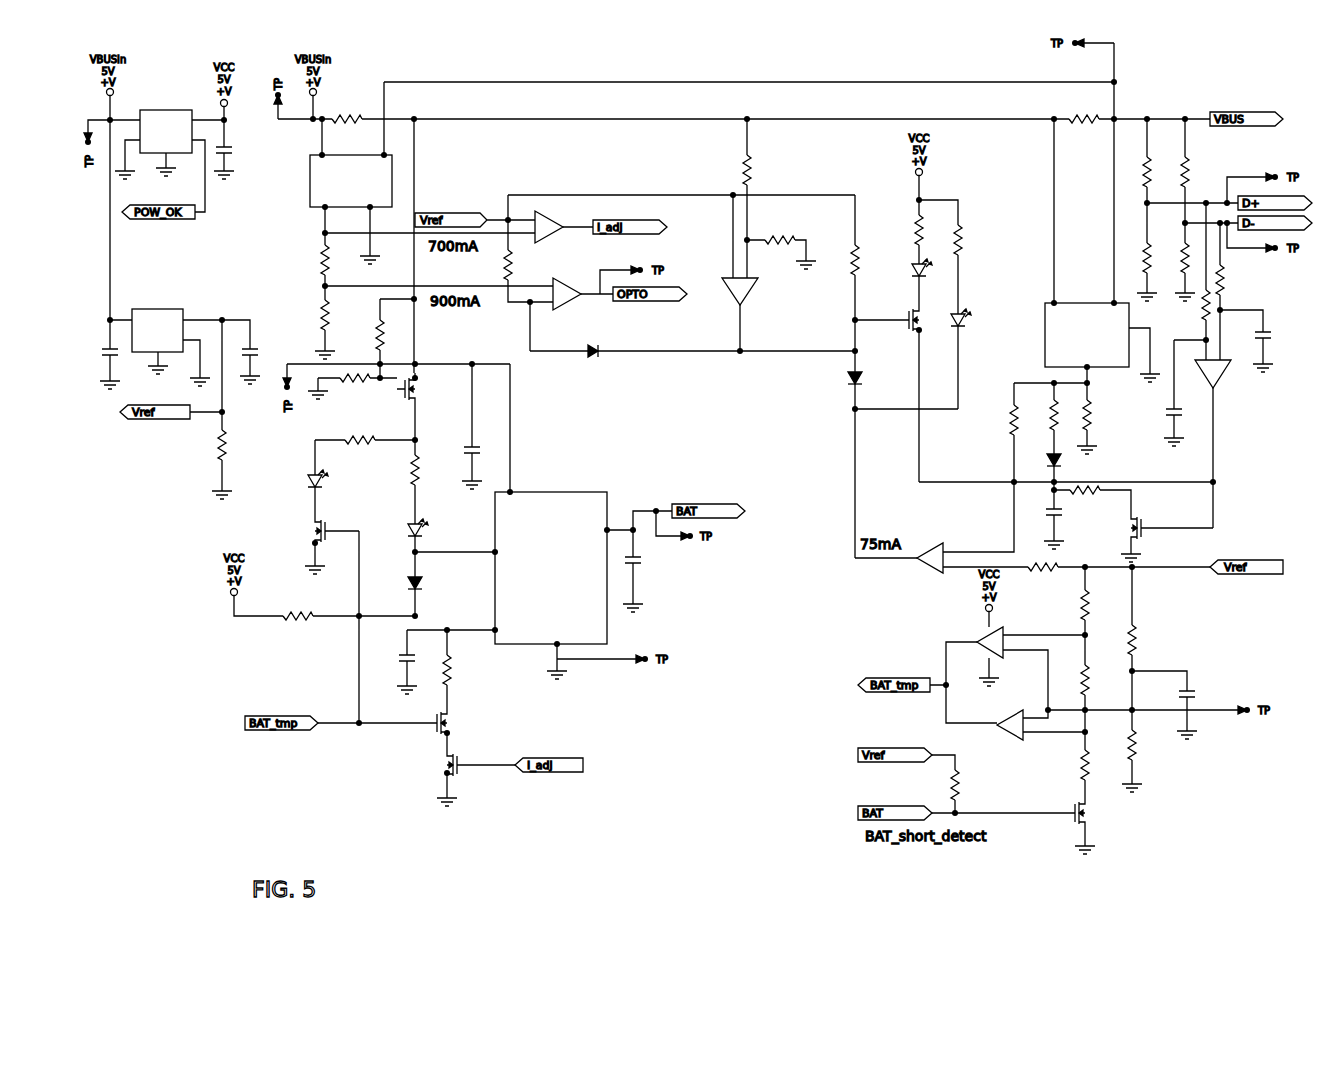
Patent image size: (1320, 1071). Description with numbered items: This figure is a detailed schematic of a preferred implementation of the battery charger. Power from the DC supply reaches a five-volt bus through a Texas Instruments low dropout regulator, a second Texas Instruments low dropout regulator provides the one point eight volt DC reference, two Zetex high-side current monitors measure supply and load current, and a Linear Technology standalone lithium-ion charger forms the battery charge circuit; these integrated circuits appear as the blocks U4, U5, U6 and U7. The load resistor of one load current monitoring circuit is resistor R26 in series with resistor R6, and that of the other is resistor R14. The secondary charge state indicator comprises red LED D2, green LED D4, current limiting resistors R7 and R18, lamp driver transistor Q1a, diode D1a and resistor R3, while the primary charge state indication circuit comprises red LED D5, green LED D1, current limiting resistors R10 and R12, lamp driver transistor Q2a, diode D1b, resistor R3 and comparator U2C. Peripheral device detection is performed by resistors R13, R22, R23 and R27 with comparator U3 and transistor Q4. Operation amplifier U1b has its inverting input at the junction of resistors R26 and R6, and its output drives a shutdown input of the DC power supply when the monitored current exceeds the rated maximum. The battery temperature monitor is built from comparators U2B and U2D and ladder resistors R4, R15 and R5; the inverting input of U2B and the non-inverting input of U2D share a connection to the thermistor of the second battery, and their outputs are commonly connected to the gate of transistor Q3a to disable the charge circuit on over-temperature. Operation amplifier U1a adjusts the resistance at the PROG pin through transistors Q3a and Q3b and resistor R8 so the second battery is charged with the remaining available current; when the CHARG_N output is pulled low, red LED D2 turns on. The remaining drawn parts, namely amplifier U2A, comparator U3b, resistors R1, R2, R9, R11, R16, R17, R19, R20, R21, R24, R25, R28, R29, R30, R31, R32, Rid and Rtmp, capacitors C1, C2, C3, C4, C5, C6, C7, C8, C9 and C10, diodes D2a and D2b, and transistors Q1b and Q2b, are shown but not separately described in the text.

The comparator U3 is at (157, 120).
The 1.8V regulator TPS77018 U4 is at (148, 318).
The current sensor ZXCT1009 U5 is at (351, 181).
The current sensor ZXCT1009 U6 is at (1087, 335).
The charger LTC4054 U7 is at (551, 568).
The operation amplifier U1a is at (561, 225).
The operation amplifier U1b is at (579, 292).
The comparator U2A is at (754, 304).
The comparator U2B is at (1015, 628).
The comparator U2C is at (910, 566).
The comparator U2D is at (994, 728).
The comparator LMV339 U3b is at (1239, 388).
The resistor 100k R1 is at (524, 264).
The resistor 2M2 R2 is at (1027, 421).
The resistor R3 is at (298, 605).
The ladder resistor R4 is at (1101, 604).
The ladder resistor R5 is at (1101, 762).
The resistor R6 is at (312, 312).
The current limiting resistor R7 is at (426, 471).
The resistor R8 is at (460, 670).
The resistor 301k R9 is at (1236, 276).
The current limiting resistor R10 is at (907, 230).
The sense resistor 0.1 R11 is at (1084, 107).
The current limiting resistor R12 is at (971, 239).
The resistor R13 is at (1199, 172).
The resistor R14 is at (1100, 415).
The ladder resistor R15 is at (1098, 680).
The resistor 301k R16 is at (1190, 310).
The resistor 1M R17 is at (392, 333).
The current limiting resistor R18 is at (360, 440).
The resistor 127k R19 is at (780, 241).
The resistor 100k R20 is at (1148, 639).
The resistor 100k R21 is at (839, 263).
The resistor R22 is at (1158, 172).
The resistor R23 is at (1173, 257).
The resistor 100k R24 is at (763, 170).
The sense resistor 0.1 R25 is at (347, 106).
The resistor R26 is at (313, 258).
The resistor R27 is at (1135, 257).
The resistor 100k R28 is at (236, 464).
The resistor 2M2 R29 is at (1043, 566).
The resistor 1k R30 is at (1065, 417).
The resistor 100k R31 is at (972, 785).
The resistor 1k R32 is at (1086, 489).
The resistor 100k DNP Rid is at (359, 389).
The resistor 50k DNP Rtmp is at (1158, 745).
The capacitor 4.7uF C1 is at (1072, 516).
The capacitor 10uF C2 is at (648, 563).
The capacitor 1uF C3 is at (483, 452).
The capacitor 1uF C4 is at (261, 363).
The capacitor 1uF C5 is at (120, 365).
The capacitor 1uF C6 is at (236, 159).
The capacitor 10nF C7 is at (1161, 412).
The capacitor 1uF C8 is at (1275, 334).
The capacitor 1uF C9 is at (1199, 695).
The capacitor 1n C10 is at (419, 658).
The green LED D1 is at (908, 271).
The diode D1a is at (427, 589).
The diode D1b is at (868, 378).
The red LED D2 is at (426, 530).
The diode D2a is at (594, 343).
The diode D2b is at (1043, 464).
The green LED D4 is at (327, 481).
The red LED D5 is at (971, 319).
The lamp driver transistor Q1a is at (351, 537).
The MOSFET FDG6321C Q1b is at (424, 389).
The lamp driver transistor Q2a is at (903, 320).
The MOSFET FDG6335 Q2b is at (1045, 822).
The transistor Q3a is at (433, 725).
The transistor Q3b is at (476, 765).
The transistor Q4 is at (1162, 531).